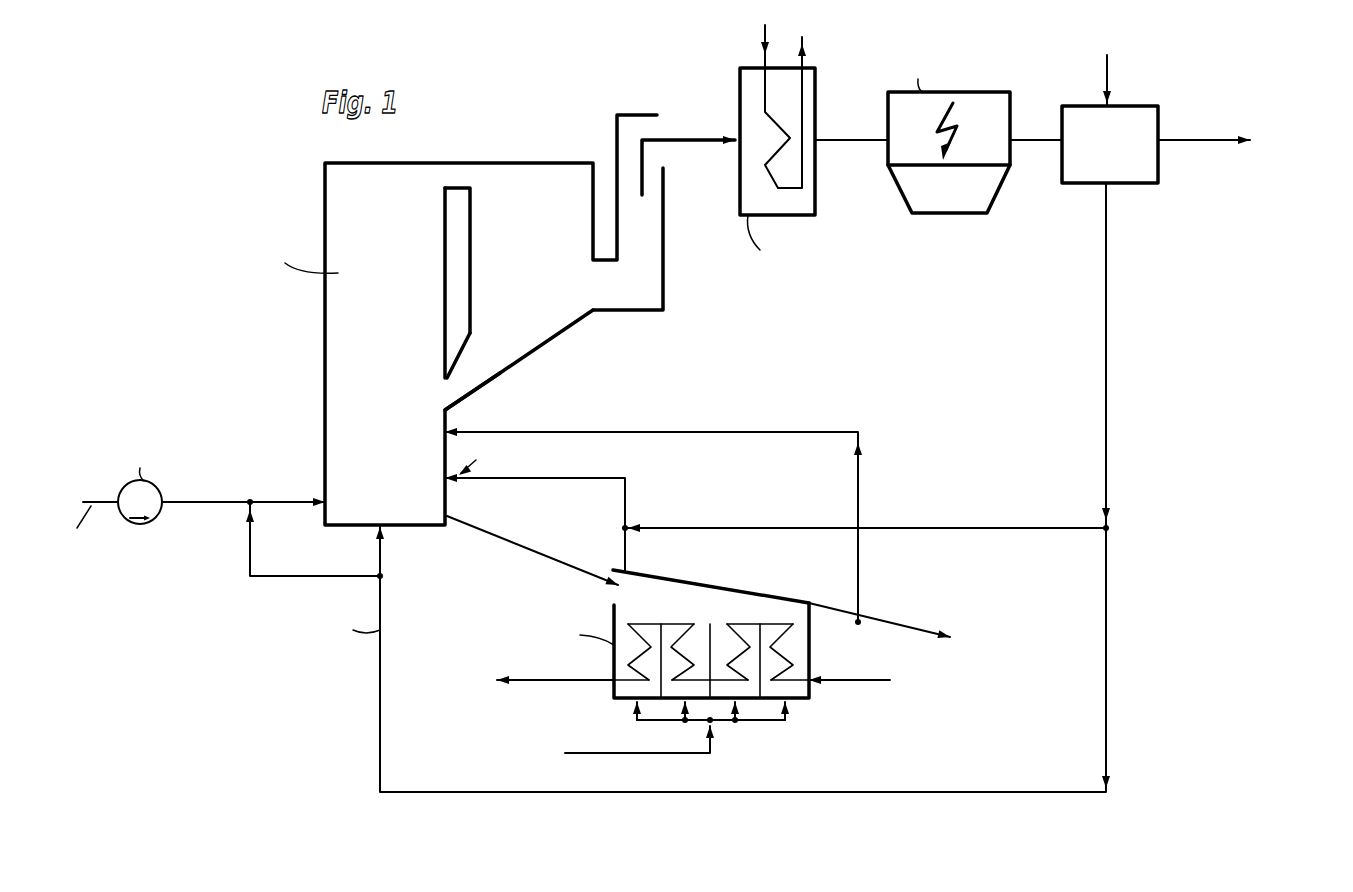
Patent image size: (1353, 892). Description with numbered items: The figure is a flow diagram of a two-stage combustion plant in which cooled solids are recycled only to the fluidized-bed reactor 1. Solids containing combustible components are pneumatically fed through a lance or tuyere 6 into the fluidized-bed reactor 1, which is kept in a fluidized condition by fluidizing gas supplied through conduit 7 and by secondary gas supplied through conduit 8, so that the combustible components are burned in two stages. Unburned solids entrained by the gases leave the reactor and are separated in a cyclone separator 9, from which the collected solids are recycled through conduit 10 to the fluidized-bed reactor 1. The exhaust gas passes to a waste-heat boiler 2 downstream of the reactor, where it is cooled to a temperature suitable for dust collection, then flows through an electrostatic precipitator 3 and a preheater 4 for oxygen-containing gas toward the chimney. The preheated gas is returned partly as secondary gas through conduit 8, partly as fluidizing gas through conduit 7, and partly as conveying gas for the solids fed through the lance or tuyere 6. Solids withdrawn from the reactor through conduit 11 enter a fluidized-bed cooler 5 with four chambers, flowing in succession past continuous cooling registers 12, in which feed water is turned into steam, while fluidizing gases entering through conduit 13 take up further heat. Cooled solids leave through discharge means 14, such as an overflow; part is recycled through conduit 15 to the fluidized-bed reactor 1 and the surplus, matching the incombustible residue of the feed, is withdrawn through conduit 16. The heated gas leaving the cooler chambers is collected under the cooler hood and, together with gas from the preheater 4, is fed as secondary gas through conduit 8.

The fluidized-bed reactor 1 is at (332, 410).
The waste-heat boiler 2 is at (785, 216).
The electrostatic precipitator 3 is at (963, 213).
The preheater 4 is at (1097, 184).
The fluidized-bed cooler 5 is at (812, 650).
The lance or tuyere 6 is at (288, 500).
The conduit 7 is at (384, 560).
The conduit 8 is at (583, 480).
The cyclone separator 9 is at (551, 325).
The conduit 10 is at (456, 389).
The conduit 11 is at (556, 564).
The cooling registers 12 is at (557, 685).
The conduit 13 is at (620, 752).
The discharge means 14 is at (812, 609).
The conduit 15 is at (861, 467).
The conduit 16 is at (909, 628).